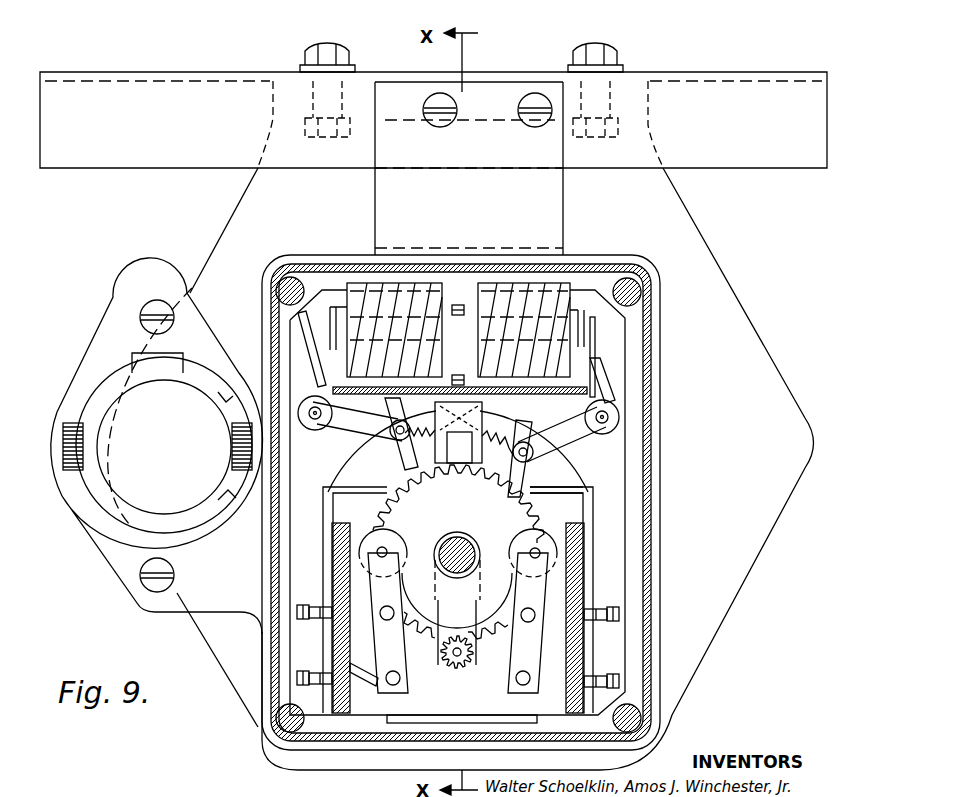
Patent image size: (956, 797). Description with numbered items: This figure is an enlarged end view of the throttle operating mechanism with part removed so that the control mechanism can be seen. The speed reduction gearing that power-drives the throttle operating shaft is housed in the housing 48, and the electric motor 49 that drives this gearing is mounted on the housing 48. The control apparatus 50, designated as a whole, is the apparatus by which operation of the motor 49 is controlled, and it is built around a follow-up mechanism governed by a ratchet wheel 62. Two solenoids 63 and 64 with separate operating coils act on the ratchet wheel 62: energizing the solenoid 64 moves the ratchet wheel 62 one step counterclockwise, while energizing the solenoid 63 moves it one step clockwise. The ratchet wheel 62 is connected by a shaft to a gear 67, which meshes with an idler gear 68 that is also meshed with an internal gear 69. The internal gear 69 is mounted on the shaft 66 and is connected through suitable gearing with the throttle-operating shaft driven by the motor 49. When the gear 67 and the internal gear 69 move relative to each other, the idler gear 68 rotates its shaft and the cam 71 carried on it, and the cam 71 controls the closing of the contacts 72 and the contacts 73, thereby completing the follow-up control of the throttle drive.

The housing 48 is at (226, 220).
The electric motor 49 is at (100, 395).
The control apparatus 50 is at (640, 353).
The ratchet wheel 62 is at (405, 488).
The solenoid 63 is at (396, 290).
The solenoid 64 is at (548, 295).
The shaft 66 is at (452, 545).
The gear 67 is at (533, 515).
The idler gear 68 is at (490, 668).
The internal gear 69 is at (543, 478).
The cam 71 is at (457, 523).
The contacts 72 is at (536, 700).
The contacts 73 is at (370, 673).